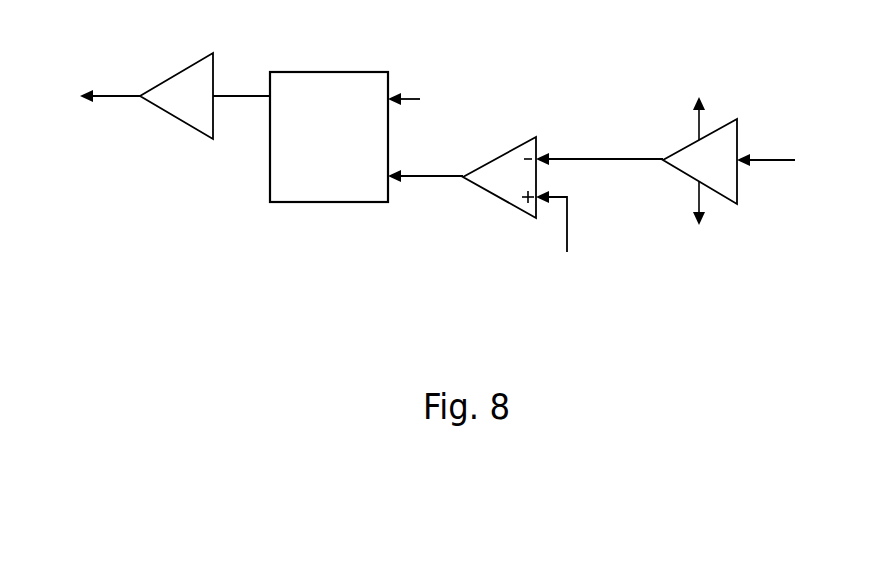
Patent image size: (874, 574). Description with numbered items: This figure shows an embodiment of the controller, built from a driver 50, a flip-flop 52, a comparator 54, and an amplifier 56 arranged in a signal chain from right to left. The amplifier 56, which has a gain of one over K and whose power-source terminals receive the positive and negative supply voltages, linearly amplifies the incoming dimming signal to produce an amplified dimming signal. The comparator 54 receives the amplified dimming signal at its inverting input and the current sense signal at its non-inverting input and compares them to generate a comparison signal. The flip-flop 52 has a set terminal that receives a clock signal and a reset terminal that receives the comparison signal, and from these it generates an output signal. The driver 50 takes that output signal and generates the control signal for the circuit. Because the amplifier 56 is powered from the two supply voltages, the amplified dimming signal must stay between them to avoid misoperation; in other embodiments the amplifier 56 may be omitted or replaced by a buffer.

The driver 50 is at (178, 73).
The flip-flop 52 is at (328, 72).
The comparator 54 is at (512, 135).
The amplifier 56 is at (739, 128).